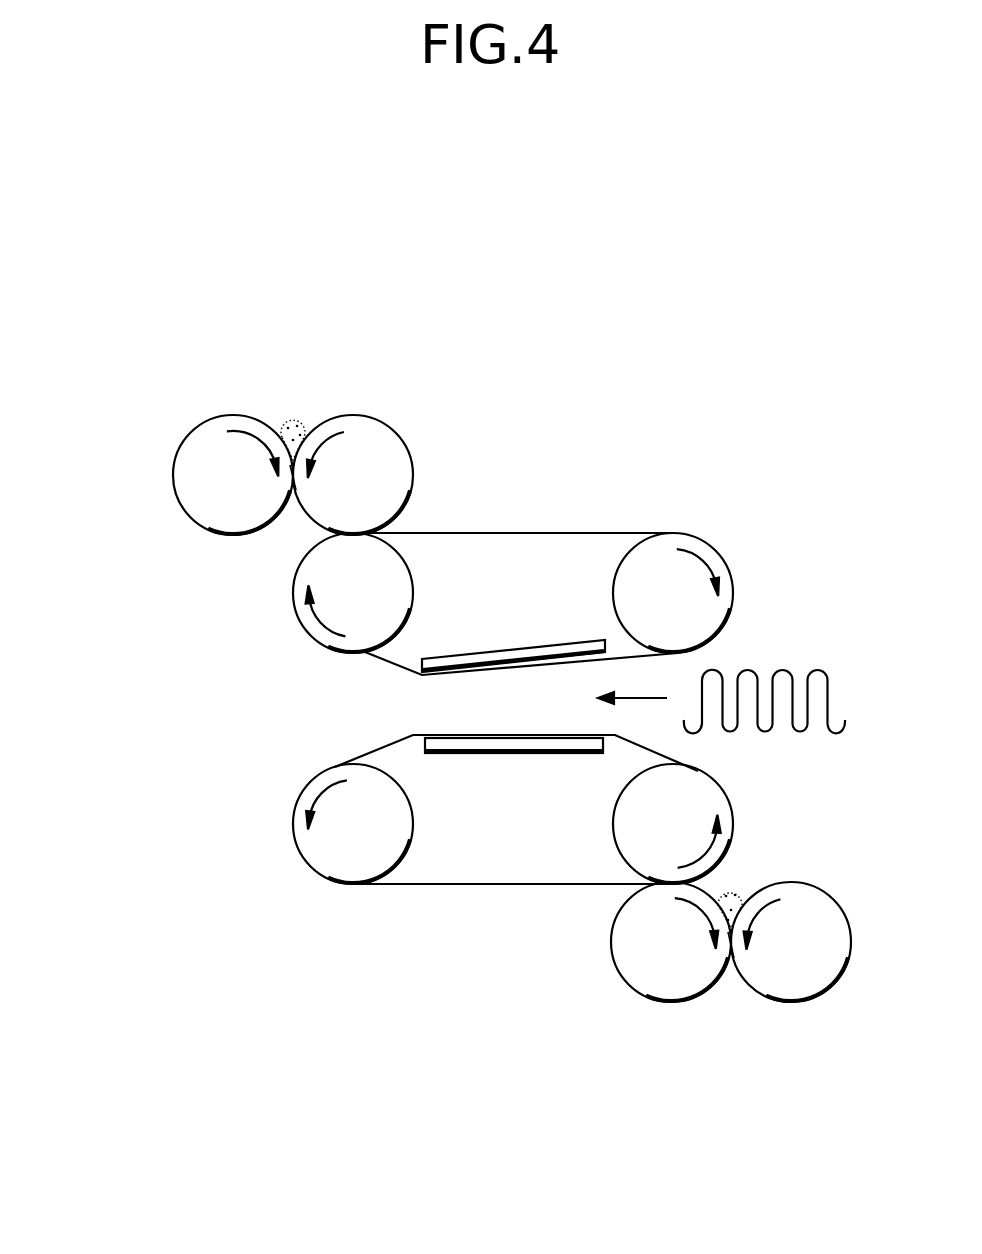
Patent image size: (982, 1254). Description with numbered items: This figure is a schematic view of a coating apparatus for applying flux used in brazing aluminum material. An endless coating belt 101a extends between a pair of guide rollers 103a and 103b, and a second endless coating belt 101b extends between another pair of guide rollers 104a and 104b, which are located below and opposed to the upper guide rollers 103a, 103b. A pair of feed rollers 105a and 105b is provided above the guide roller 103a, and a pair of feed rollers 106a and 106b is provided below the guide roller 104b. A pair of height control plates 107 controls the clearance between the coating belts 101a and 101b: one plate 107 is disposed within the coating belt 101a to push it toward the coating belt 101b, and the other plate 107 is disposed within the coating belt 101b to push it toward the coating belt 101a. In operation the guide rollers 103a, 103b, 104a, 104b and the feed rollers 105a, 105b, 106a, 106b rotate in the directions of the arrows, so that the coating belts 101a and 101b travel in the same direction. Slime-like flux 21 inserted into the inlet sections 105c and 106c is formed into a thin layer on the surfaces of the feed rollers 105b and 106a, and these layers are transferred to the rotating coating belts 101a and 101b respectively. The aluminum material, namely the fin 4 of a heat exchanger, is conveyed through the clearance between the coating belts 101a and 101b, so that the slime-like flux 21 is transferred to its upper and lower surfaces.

The fin 4 is at (814, 670).
The slime-like flux 21 is at (295, 418).
The coating belt 101a is at (520, 533).
The coating belt 101b is at (468, 884).
The guide roller 103a is at (303, 596).
The guide roller 103b is at (670, 542).
The guide roller 104a is at (303, 828).
The guide roller 104b is at (715, 798).
The feed roller 105a is at (186, 463).
The feed roller 105b is at (378, 433).
The inlet section 105c is at (280, 423).
The feed roller 106a is at (672, 1002).
The feed roller 106b is at (791, 1002).
The inlet section 106c is at (745, 897).
The height control plate 107 is at (483, 658).